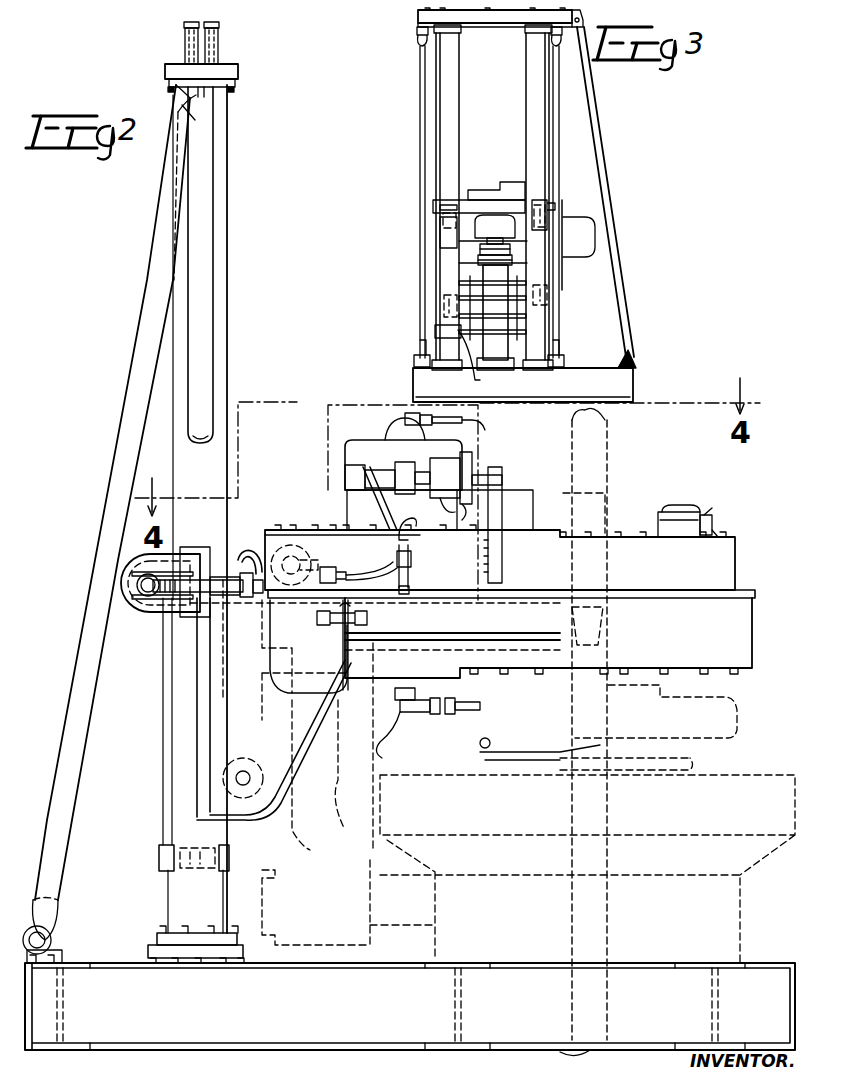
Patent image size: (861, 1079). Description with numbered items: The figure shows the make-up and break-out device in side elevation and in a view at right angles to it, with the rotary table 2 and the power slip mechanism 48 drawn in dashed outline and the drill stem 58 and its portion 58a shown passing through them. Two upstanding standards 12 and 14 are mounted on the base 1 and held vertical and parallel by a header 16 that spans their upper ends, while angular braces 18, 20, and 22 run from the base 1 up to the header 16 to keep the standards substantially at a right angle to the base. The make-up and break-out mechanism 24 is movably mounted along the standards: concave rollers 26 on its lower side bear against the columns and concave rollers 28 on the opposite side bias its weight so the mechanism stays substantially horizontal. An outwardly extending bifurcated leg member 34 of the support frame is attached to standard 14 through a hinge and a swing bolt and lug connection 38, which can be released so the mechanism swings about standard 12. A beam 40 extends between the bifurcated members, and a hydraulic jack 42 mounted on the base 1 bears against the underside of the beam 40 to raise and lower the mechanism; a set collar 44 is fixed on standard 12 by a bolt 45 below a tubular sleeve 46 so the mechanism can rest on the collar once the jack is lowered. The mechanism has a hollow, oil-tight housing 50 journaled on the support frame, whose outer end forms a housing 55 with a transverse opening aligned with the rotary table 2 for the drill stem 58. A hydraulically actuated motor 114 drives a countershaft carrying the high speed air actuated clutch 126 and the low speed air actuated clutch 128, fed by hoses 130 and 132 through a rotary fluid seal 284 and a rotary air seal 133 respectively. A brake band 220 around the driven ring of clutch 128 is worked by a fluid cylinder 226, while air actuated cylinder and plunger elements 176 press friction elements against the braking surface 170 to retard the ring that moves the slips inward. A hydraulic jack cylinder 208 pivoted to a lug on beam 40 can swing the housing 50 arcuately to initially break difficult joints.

In FIG. 2, the base 1 is at (226, 1049).
In FIG. 3, the base 1 is at (636, 380).
In FIG. 2, the rotary table 2 is at (800, 835).
In FIG. 3, the rotary table 2 is at (557, 314).
In FIG. 3, the upstanding standard 12 is at (452, 58).
In FIG. 2, the upstanding standard 14 is at (228, 172).
In FIG. 3, the upstanding standard 14 is at (533, 54).
In FIG. 2, the header 16 is at (238, 71).
In FIG. 3, the header 16 is at (482, 27).
In FIG. 3, the angular brace 18 is at (417, 98).
In FIG. 2, the angular brace 20 is at (156, 250).
In FIG. 3, the angular brace 20 is at (594, 92).
In FIG. 2, the angular brace 22 is at (204, 218).
In FIG. 3, the angular brace 22 is at (600, 106).
In FIG. 2, the make-up and break-out mechanism 24 is at (737, 568).
In FIG. 3, the make-up and break-out mechanism 24 is at (488, 186).
In FIG. 2, the concave roller 26 is at (243, 800).
In FIG. 3, the concave roller 26 is at (552, 297).
In FIG. 2, the concave roller 28 is at (165, 620).
In FIG. 3, the concave roller 28 is at (548, 195).
In FIG. 2, the bifurcated leg member 34 is at (306, 748).
In FIG. 2, the swing bolt and lug connection 38 is at (180, 614).
In FIG. 3, the beam 40 is at (468, 200).
In FIG. 3, the hydraulic jack 42 is at (505, 350).
In FIG. 2, the set collar 44 is at (160, 866).
In FIG. 3, the set collar 44 is at (438, 334).
In FIG. 2, the bolt 45 is at (188, 875).
In FIG. 3, the bolt 45 is at (485, 363).
In FIG. 2, the tubular sleeve 46 is at (163, 832).
In FIG. 3, the tubular sleeve 46 is at (440, 312).
In FIG. 2, the power slip mechanism 48 is at (740, 718).
In FIG. 3, the power slip mechanism 48 is at (466, 255).
In FIG. 2, the hollow housing 50 is at (740, 584).
In FIG. 3, the hollow housing 50 is at (598, 207).
In FIG. 2, the housing 55 is at (752, 636).
In FIG. 2, the drill stem 58 is at (572, 1058).
In FIG. 2, the drill stem portion 58a is at (608, 470).
In FIG. 2, the hydraulically actuated motor 114 is at (274, 660).
In FIG. 3, the hydraulically actuated motor 114 is at (590, 237).
In FIG. 2, the air actuated clutch 126 is at (455, 700).
In FIG. 2, the air actuated clutch 128 is at (345, 447).
In FIG. 2, the hose 130 is at (462, 716).
In FIG. 2, the hose 132 is at (500, 428).
In FIG. 2, the rotary air seal 133 is at (405, 418).
In FIG. 2, the braking surface 170 is at (640, 520).
In FIG. 2, the air actuated cylinder and plunger element 176 is at (700, 512).
In FIG. 2, the hydraulic jack cylinder 208 is at (243, 555).
In FIG. 2, the brake band 220 is at (345, 475).
In FIG. 2, the fluid cylinder 226 is at (470, 468).
In FIG. 2, the rotary fluid seal 284 is at (405, 739).